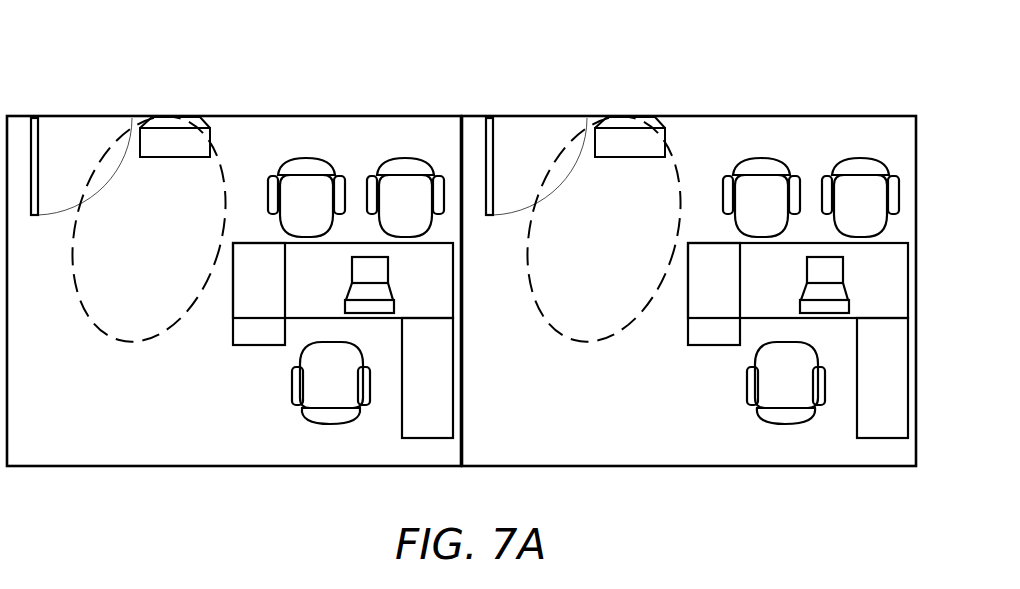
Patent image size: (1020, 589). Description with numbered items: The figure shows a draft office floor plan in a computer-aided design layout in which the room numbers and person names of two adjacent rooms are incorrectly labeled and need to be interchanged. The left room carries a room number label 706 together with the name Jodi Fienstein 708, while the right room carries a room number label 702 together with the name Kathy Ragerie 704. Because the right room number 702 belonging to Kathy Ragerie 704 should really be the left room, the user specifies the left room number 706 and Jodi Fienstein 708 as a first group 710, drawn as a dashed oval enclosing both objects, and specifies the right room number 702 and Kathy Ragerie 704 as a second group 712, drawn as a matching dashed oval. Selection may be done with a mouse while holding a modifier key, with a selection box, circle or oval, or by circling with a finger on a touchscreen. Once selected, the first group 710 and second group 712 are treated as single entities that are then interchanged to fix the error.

The room #6150 702 is at (666, 143).
The Kathy Ragerie 704 is at (550, 261).
The room #6151 706 is at (212, 143).
The Jodi Fienstein 708 is at (93, 261).
The first group 710 is at (130, 343).
The second group 712 is at (585, 343).